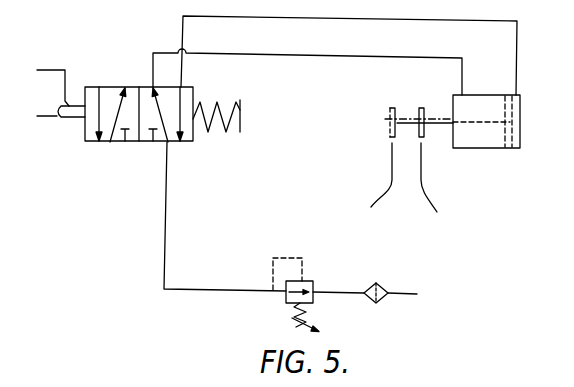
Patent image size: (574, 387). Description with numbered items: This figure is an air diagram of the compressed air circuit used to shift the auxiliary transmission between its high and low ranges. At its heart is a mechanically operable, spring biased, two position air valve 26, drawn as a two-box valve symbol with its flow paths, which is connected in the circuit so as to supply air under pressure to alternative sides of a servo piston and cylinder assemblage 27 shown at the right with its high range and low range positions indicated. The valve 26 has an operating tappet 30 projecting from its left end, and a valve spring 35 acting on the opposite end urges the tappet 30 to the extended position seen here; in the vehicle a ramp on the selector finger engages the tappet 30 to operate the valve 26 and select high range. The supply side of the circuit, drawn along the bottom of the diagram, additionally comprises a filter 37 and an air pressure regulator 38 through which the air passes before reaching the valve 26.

The two position air valve 26 is at (113, 87).
The servo piston and cylinder assemblage 27 is at (490, 149).
The operating tappet 30 is at (69, 121).
The valve spring 35 is at (216, 131).
The filter 37 is at (384, 300).
The air pressure regulator 38 is at (284, 298).